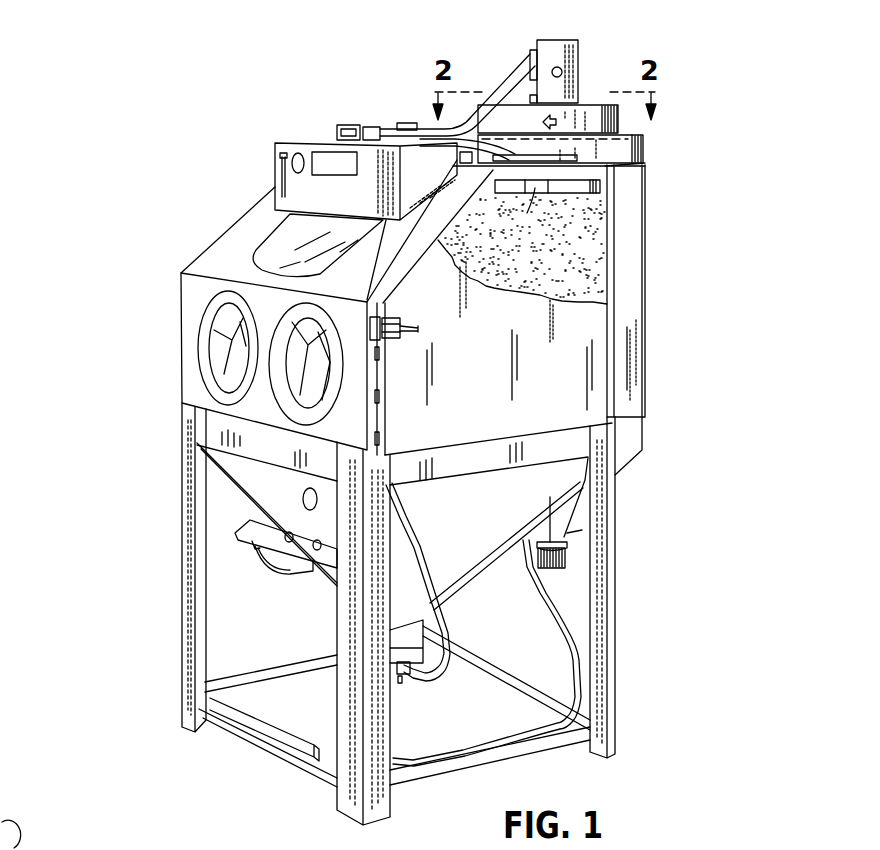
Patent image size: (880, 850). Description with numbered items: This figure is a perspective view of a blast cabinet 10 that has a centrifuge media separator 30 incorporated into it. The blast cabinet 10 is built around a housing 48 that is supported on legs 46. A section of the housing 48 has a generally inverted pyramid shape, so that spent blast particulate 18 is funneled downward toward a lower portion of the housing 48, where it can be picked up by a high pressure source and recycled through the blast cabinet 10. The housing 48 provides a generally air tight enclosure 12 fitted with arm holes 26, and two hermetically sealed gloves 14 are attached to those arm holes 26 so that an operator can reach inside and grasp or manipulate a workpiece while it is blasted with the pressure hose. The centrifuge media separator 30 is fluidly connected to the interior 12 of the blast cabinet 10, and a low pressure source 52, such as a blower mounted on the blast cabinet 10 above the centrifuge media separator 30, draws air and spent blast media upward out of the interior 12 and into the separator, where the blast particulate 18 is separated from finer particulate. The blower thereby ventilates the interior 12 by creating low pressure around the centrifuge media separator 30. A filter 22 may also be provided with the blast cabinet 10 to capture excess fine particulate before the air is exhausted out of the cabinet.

The blast cabinet 10 is at (138, 122).
The air tight enclosure 12 is at (232, 240).
The hermetically sealed gloves 14 is at (233, 320).
The blast particulate 18 is at (580, 229).
The filter 22 is at (646, 151).
The arm holes 26 is at (303, 377).
The centrifuge media separator 30 is at (604, 187).
The legs 46 is at (185, 570).
The housing 48 is at (650, 316).
The low pressure source 52 is at (571, 50).